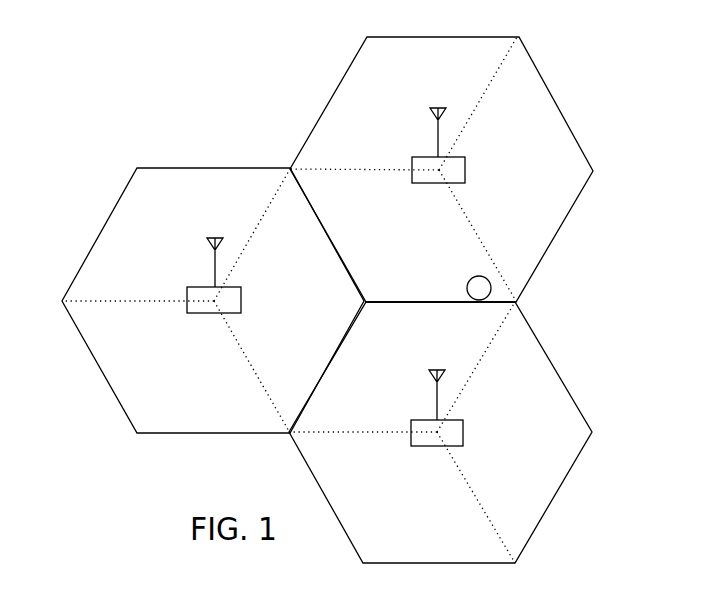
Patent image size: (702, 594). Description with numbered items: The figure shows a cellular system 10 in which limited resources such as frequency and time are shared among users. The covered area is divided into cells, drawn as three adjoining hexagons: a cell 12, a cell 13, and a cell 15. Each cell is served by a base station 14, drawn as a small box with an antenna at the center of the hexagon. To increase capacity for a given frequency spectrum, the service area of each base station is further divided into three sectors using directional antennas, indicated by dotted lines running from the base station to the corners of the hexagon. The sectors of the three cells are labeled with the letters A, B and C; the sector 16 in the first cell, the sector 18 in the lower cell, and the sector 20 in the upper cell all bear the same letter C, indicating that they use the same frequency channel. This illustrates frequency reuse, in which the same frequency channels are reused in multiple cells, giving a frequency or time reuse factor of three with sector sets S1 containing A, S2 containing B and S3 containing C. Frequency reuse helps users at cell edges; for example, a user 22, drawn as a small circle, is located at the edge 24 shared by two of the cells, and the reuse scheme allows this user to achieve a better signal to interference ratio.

The cellular system 10 is at (231, 143).
The cell 12 is at (137, 168).
The cell 13 is at (367, 37).
The base station 14 is at (241, 290).
The cell 15 is at (592, 432).
The sector 16 is at (179, 301).
The sector 18 is at (409, 432).
The sector 20 is at (410, 169).
The user 22 is at (467, 281).
The edge 24 is at (422, 305).